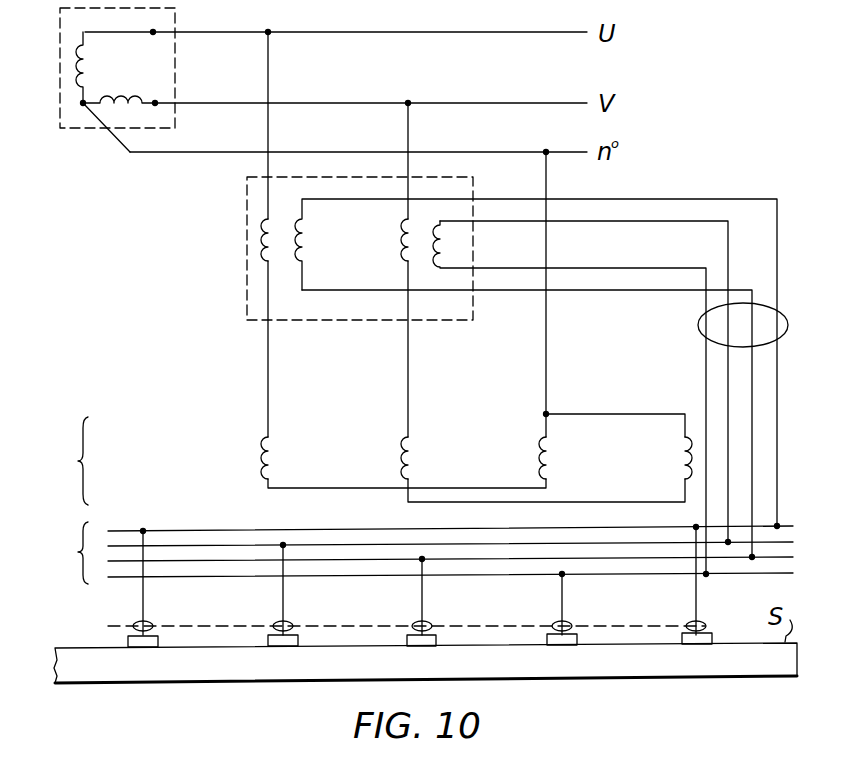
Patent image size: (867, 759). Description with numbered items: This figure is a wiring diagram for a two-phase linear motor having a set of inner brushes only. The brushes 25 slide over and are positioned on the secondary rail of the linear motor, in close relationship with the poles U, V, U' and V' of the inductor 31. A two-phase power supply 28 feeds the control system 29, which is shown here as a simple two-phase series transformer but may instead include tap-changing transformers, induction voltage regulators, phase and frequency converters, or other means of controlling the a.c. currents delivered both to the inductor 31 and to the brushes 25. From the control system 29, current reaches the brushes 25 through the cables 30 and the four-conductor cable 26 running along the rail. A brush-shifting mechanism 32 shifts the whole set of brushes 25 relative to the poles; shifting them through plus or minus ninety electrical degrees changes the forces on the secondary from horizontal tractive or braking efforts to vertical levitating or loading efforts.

The brushes 25 is at (258, 645).
The four-conductor cable 26 is at (68, 552).
The two-phase power supply 28 is at (182, 26).
The control system 29 is at (240, 211).
The cables 30 is at (789, 330).
The inductor 31 is at (72, 460).
The brush-shifting mechanism 32 is at (99, 627).